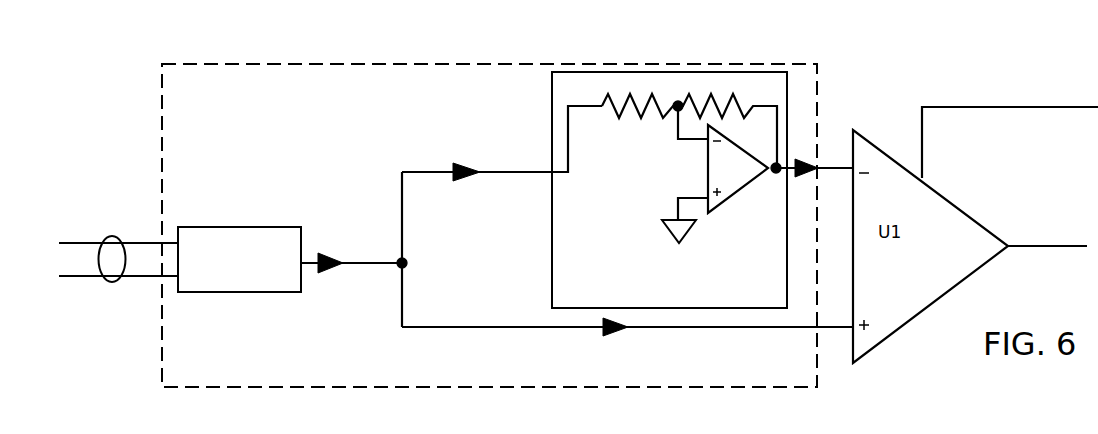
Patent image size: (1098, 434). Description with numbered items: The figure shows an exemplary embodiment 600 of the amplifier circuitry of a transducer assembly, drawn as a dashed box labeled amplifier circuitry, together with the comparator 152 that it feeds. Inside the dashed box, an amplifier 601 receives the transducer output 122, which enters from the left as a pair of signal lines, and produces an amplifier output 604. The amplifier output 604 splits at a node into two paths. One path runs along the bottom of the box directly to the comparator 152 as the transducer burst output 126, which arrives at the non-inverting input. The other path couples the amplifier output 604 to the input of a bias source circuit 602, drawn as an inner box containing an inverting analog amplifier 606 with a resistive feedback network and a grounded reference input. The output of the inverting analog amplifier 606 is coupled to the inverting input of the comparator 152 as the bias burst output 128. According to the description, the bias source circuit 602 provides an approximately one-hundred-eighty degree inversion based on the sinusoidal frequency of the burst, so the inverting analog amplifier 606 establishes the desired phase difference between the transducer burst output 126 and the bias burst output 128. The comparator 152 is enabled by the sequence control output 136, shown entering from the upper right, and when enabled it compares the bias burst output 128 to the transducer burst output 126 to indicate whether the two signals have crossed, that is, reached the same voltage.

The exemplary embodiment of the amplifier circuitry 600 is at (162, 112).
The amplifier 601 is at (222, 292).
The bias source circuit 602 is at (552, 118).
The amplifier output 604 is at (390, 262).
The inverting analog amplifier 606 is at (715, 205).
The transducer output 122 is at (112, 283).
The transducer burst output 126 is at (840, 329).
The bias burst output 128 is at (825, 166).
The sequence control output 136 is at (995, 107).
The comparator 152 is at (980, 220).